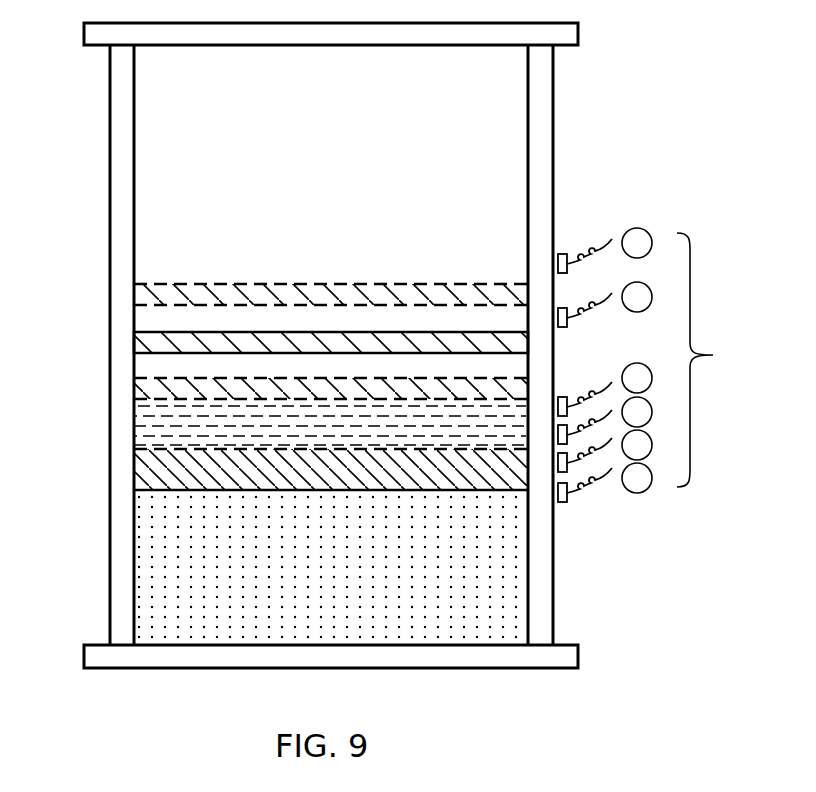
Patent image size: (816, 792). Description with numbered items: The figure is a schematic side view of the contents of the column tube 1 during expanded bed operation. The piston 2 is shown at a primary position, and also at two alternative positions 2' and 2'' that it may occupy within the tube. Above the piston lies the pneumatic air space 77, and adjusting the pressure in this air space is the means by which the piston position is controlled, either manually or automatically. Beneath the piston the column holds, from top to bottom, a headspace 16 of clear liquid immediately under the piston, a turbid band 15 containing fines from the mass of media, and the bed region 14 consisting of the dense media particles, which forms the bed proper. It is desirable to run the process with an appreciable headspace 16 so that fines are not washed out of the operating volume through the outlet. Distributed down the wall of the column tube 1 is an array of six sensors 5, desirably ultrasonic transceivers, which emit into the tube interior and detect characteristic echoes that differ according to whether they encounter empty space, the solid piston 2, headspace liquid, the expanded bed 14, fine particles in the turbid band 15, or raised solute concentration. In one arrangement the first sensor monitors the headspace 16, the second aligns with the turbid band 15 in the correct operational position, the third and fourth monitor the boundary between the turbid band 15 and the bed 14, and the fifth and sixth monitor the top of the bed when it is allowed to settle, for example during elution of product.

The column tube 1 is at (110, 216).
The pneumatic air space 77 is at (364, 186).
The alternative piston position 2' is at (295, 305).
The piston 2 is at (295, 351).
The alternative piston position 2'' is at (294, 395).
The headspace 16 is at (150, 423).
The turbid band 15 is at (140, 476).
The bed region 14 is at (160, 548).
The sensors 5 is at (713, 355).